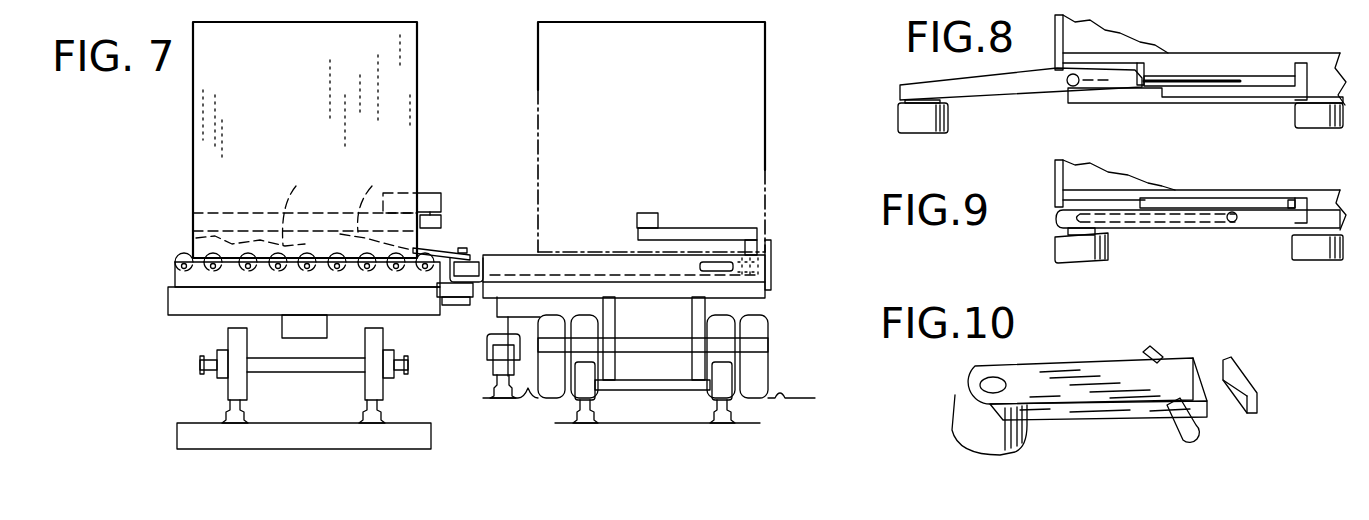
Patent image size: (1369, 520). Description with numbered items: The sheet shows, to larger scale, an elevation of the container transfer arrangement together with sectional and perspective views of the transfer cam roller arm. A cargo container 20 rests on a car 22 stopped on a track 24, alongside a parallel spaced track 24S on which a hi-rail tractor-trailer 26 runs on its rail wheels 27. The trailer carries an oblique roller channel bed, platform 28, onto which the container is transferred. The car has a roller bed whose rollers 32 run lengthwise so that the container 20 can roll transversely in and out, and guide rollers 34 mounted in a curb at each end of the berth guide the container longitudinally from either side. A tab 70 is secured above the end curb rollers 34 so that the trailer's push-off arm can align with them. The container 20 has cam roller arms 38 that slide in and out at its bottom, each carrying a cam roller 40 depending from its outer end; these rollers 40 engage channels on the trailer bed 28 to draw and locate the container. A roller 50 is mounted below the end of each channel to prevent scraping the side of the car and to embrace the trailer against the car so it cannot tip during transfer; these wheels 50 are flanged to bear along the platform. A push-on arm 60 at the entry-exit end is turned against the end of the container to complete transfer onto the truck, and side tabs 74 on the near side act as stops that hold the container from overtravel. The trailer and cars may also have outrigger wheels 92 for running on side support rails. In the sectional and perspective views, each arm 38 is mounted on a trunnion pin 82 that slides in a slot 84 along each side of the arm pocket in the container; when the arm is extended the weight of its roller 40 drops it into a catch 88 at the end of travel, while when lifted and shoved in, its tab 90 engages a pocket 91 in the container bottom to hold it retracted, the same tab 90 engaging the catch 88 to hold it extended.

In FIG. 7, the cargo container 20 is at (545, 115).
In FIG. 8, the cargo container 20 is at (1205, 52).
In FIG. 9, the cargo container 20 is at (1183, 195).
In FIG. 7, the car 22 is at (175, 296).
In FIG. 7, the track 24 is at (185, 437).
In FIG. 7, the parallel spaced track 24S is at (735, 422).
In FIG. 7, the hi-rail tractor-trailer 26 is at (755, 331).
In FIG. 7, the rail wheels 27 is at (670, 392).
In FIG. 7, the platform 28 is at (767, 297).
In FIG. 7, the rollers 32 is at (178, 258).
In FIG. 7, the guide rollers 34 is at (435, 218).
In FIG. 7, the cam roller arm 38 is at (232, 248).
In FIG. 8, the cam roller arm 38 is at (990, 98).
In FIG. 9, the cam roller arm 38 is at (1182, 227).
In FIG. 10, the cam roller arm 38 is at (1042, 368).
In FIG. 7, the cam roller 40 is at (470, 258).
In FIG. 8, the cam roller 40 is at (905, 125).
In FIG. 9, the cam roller 40 is at (1070, 255).
In FIG. 10, the cam roller 40 is at (1030, 430).
In FIG. 7, the roller 50 is at (463, 300).
In FIG. 7, the push-on arm 60 is at (730, 228).
In FIG. 7, the tab 70 is at (420, 192).
In FIG. 7, the side tabs 74 is at (770, 252).
In FIG. 8, the trunnion pin 82 is at (1066, 88).
In FIG. 9, the trunnion pin 82 is at (1230, 225).
In FIG. 10, the trunnion pin 82 is at (1160, 345).
In FIG. 8, the slot 84 is at (1233, 75).
In FIG. 9, the slot 84 is at (1142, 223).
In FIG. 8, the catch 88 is at (1148, 70).
In FIG. 9, the catch 88 is at (1130, 202).
In FIG. 7, the tab 90 is at (306, 202).
In FIG. 8, the tab 90 is at (1140, 66).
In FIG. 9, the tab 90 is at (1305, 202).
In FIG. 10, the tab 90 is at (1243, 367).
In FIG. 7, the pocket 91 is at (363, 196).
In FIG. 8, the pocket 91 is at (1305, 66).
In FIG. 9, the pocket 91 is at (1303, 205).
In FIG. 7, the outrigger wheels 92 is at (487, 372).